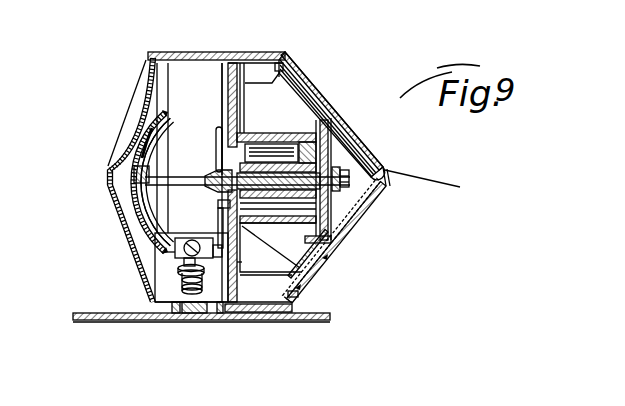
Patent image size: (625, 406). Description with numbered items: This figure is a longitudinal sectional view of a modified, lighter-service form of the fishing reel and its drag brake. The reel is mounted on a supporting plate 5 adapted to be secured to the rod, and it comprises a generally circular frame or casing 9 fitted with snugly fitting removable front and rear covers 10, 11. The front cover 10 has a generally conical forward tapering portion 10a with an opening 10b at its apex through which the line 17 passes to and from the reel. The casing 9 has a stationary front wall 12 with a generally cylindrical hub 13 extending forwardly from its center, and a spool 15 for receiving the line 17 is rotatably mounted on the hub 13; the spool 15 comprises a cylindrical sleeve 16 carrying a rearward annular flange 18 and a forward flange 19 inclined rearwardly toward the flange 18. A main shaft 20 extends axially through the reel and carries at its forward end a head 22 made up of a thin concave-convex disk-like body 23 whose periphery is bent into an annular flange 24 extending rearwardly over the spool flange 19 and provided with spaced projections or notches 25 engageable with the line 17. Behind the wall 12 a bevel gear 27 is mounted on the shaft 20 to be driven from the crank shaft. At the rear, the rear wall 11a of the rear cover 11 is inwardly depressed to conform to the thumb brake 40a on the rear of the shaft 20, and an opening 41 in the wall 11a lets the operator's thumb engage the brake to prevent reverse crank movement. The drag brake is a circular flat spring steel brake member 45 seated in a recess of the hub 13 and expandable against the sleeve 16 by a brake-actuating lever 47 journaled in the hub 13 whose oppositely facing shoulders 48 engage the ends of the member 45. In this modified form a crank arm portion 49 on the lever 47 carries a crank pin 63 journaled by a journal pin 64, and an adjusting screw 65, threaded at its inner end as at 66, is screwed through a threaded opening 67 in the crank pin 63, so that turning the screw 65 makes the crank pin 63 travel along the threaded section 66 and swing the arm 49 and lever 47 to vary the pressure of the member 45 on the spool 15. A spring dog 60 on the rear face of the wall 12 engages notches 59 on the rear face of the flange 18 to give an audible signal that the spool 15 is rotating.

The supporting plate 5 is at (83, 313).
The frame or casing 9 is at (184, 52).
The front cover 10 is at (167, 4).
The conical forward tapering portion 10a is at (340, 108).
The opening 10b is at (388, 190).
The rear cover 11 is at (145, 76).
The rear wall 11a is at (107, 174).
The front wall 12 is at (228, 70).
The hub 13 is at (310, 150).
The spool 15 is at (256, 288).
The cylindrical sleeve 16 is at (277, 135).
The line 17 is at (428, 177).
The annular flange 18 is at (265, 52).
The flange 19 is at (283, 100).
The main shaft 20 is at (350, 179).
The head 22 is at (330, 257).
The disk-like body 23 is at (332, 215).
The annular flange 24 is at (302, 292).
The projections or notches 25 is at (285, 70).
The bevel gear 27 is at (220, 172).
The thumb brake 40a is at (133, 214).
The opening 41 is at (146, 118).
The brake member 45 is at (263, 138).
The brake-actuating lever 47 is at (218, 204).
The shoulders 48 is at (290, 218).
The crank arm portion 49 is at (218, 222).
The notches 59 is at (230, 107).
The spring dog 60 is at (230, 118).
The crank pin 63 is at (210, 262).
The journal pin 64 is at (243, 262).
The adjusting screw 65 is at (185, 249).
The threaded section 66 is at (182, 264).
The threaded opening 67 is at (168, 243).